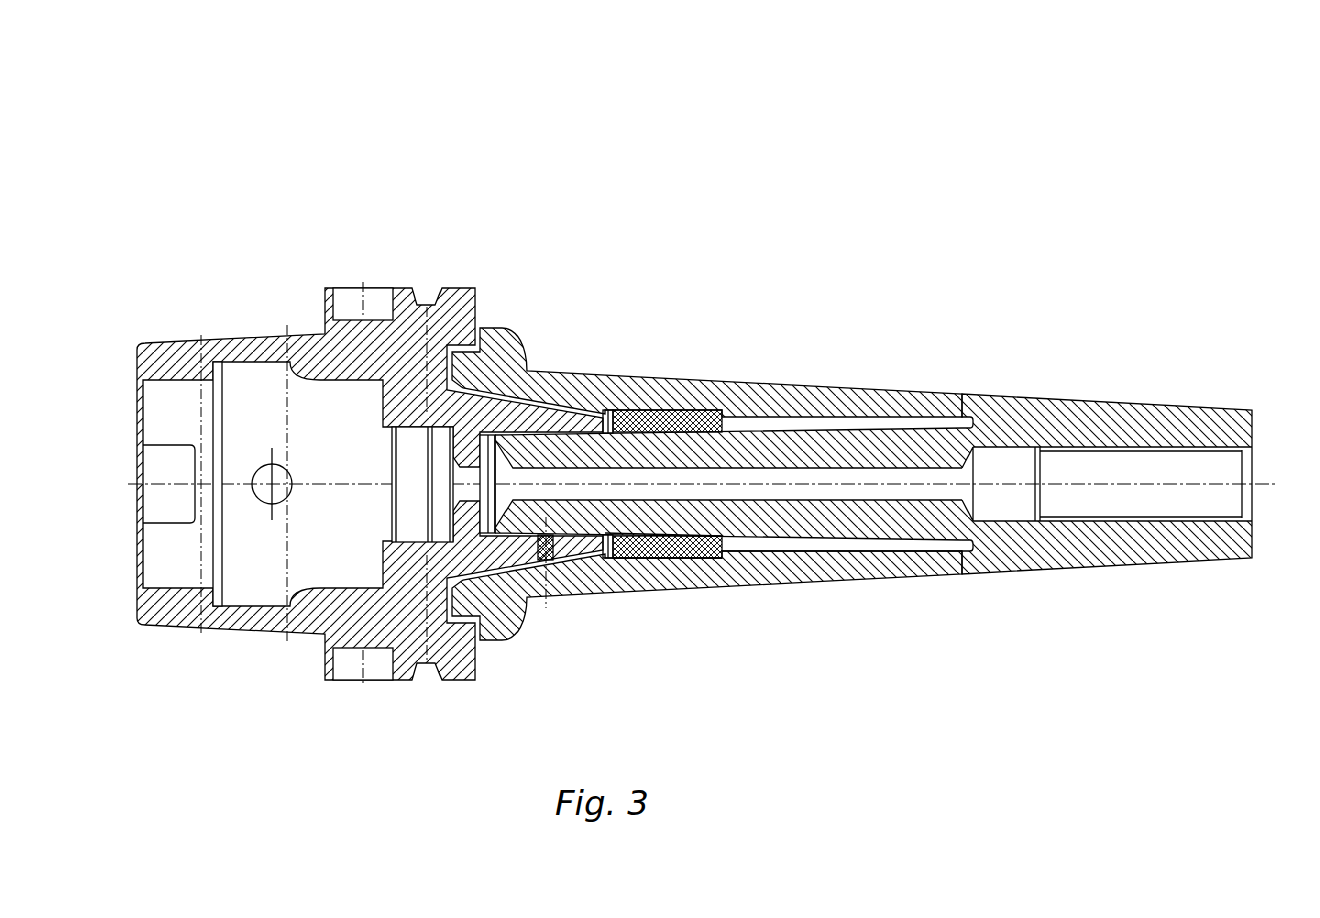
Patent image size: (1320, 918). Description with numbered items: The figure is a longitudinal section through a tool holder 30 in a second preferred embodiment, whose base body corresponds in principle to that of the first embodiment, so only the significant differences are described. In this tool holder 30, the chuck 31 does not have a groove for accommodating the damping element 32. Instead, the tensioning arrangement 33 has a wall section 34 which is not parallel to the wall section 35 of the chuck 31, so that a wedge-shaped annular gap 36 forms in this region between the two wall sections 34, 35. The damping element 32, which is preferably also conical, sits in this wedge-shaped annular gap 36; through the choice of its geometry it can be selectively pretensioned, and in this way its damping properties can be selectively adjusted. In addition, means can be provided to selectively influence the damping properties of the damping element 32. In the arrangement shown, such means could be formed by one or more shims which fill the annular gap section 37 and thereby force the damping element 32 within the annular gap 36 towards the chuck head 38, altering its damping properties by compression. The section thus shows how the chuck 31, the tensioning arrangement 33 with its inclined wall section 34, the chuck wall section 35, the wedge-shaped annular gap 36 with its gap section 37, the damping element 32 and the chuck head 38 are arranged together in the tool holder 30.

The tool holder 30 is at (701, 370).
The chuck 31 is at (822, 452).
The damping element 32 is at (693, 422).
The tensioning arrangement 33 is at (782, 567).
The wall section 34 is at (668, 563).
The wall section 35 is at (660, 533).
The annular gap 36 is at (742, 543).
The annular gap section 37 is at (608, 408).
The chuck head 38 is at (1063, 428).